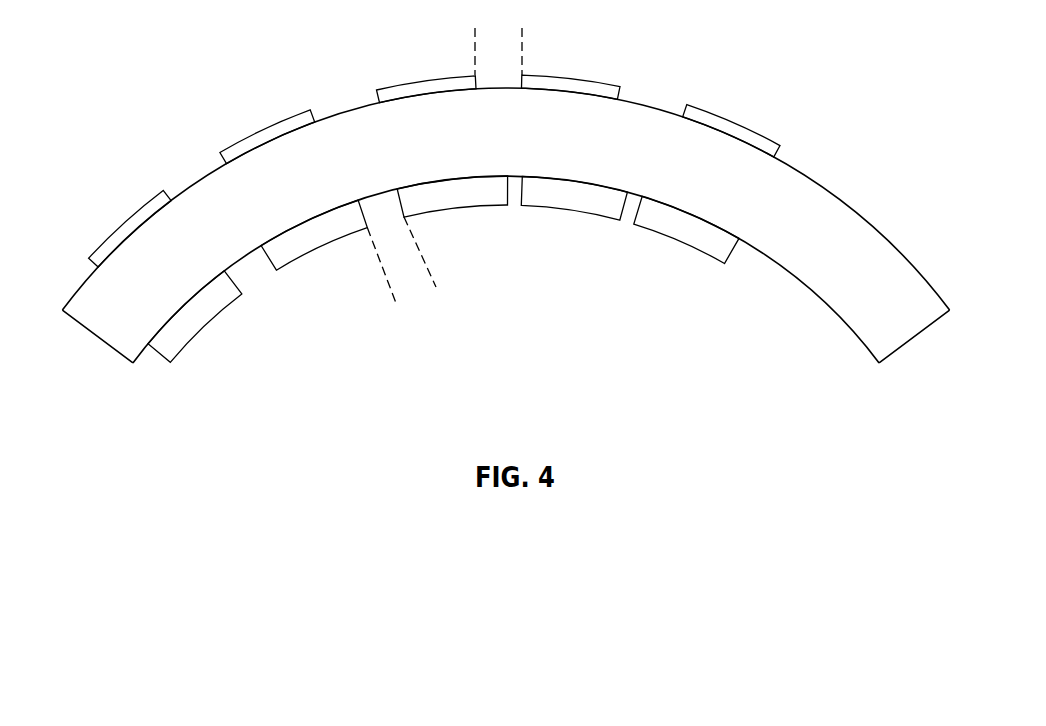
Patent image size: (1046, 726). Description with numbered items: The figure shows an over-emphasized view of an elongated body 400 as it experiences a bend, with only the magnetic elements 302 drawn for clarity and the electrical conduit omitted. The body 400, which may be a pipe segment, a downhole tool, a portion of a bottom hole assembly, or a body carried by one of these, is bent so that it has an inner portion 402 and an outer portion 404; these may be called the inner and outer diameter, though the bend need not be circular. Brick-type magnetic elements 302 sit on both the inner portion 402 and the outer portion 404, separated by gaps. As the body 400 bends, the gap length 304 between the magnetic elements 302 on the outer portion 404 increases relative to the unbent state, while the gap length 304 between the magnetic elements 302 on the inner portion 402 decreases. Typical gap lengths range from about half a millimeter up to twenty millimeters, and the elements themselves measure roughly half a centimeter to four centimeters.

The elongated body 400 is at (512, 230).
The inner portion 402 is at (853, 333).
The outer portion 404 is at (835, 193).
The magnetic elements 302 is at (403, 82).
The gap length 304 is at (425, 36).